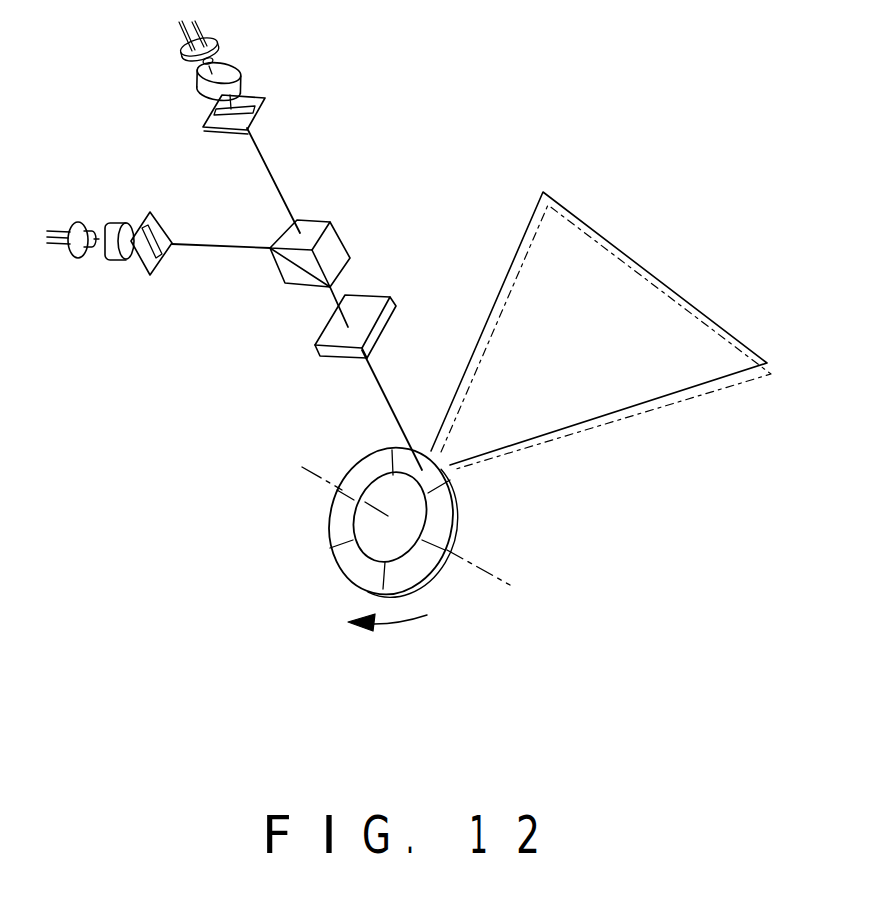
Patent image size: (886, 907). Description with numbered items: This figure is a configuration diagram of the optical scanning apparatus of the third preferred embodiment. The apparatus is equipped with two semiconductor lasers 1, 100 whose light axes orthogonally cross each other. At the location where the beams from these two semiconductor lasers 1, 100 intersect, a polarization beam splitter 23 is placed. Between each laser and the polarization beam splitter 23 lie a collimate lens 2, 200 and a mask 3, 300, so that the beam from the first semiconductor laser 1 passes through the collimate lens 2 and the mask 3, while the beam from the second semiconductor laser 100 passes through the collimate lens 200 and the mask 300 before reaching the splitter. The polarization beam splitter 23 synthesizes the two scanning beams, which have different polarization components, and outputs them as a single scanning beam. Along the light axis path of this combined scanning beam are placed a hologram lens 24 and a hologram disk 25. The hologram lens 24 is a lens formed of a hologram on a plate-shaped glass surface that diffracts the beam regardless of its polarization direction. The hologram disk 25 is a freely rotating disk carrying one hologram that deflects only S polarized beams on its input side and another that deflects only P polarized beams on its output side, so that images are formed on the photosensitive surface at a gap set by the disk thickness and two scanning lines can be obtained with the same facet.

The semiconductor laser 1 is at (215, 53).
The collimate lens 2 is at (241, 74).
The mask 3 is at (262, 100).
The polarization beam splitter 23 is at (335, 227).
The hologram lens 24 is at (367, 293).
The hologram disk 25 is at (420, 562).
The semiconductor laser 100 is at (70, 258).
The collimate lens 200 is at (123, 262).
The mask 300 is at (163, 262).